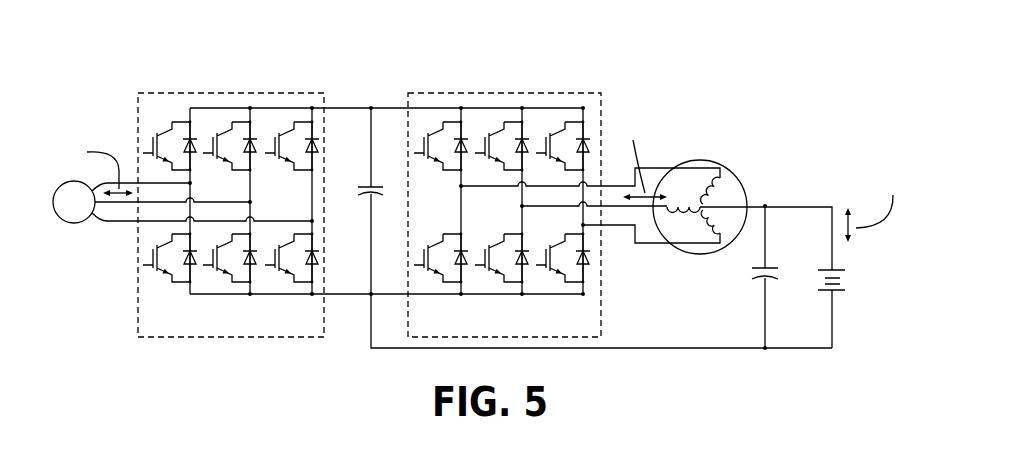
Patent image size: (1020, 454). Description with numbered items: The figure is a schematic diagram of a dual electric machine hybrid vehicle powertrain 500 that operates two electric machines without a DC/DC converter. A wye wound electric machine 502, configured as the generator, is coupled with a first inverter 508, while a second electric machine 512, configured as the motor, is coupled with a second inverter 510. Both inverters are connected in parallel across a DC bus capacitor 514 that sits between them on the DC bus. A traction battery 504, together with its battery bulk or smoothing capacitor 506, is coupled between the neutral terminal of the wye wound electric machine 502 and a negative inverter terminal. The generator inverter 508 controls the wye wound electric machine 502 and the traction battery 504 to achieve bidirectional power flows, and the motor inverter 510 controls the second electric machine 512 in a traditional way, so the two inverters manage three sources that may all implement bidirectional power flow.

The dual electric machine hybrid vehicle powertrain 500 is at (578, 48).
The wye wound electric machine 502 is at (741, 174).
The traction battery 504 is at (838, 292).
The smoothing capacitor 506 is at (753, 279).
The first inverter 508 is at (503, 92).
The second inverter 510 is at (235, 92).
The second electric machine 512 is at (74, 224).
The DC bus capacitor 514 is at (379, 186).